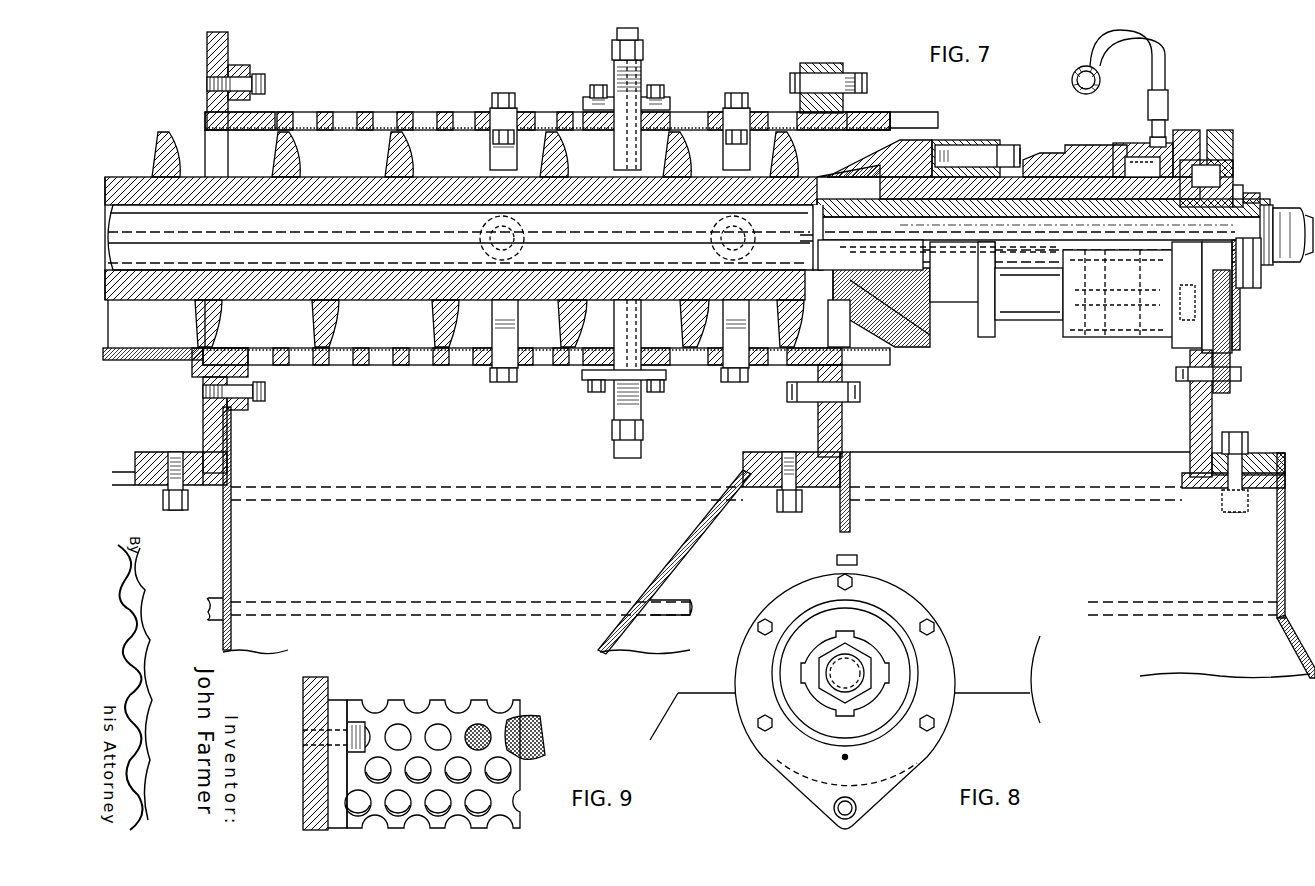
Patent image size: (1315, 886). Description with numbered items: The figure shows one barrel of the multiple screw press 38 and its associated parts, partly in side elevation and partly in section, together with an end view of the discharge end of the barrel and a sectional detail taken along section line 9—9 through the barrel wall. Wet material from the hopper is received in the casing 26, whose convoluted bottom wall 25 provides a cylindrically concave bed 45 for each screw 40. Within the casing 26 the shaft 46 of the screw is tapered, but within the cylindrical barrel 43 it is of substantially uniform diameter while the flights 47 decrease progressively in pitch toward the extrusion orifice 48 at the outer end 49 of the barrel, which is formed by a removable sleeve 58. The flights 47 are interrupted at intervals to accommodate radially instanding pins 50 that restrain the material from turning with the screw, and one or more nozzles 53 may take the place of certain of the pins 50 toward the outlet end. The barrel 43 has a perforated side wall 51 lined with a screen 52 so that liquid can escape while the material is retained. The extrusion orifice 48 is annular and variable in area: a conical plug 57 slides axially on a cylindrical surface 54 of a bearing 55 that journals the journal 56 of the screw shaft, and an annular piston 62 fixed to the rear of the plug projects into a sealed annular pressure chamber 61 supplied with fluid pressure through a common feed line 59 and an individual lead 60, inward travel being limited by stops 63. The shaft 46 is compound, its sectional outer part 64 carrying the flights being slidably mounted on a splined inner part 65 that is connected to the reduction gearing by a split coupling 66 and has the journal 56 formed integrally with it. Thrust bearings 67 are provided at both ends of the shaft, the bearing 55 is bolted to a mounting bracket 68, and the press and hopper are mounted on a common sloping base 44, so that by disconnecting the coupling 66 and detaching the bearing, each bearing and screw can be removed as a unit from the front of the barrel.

In FIG. 7, the section line 9 is at (185, 48).
In FIG. 7, the bottom wall 25 is at (178, 348).
In FIG. 7, the casing 26 is at (230, 42).
In FIG. 9, the casing 26 is at (328, 678).
In FIG. 7, the multiple screw press 38 is at (823, 62).
In FIG. 7, the screws 40 is at (383, 303).
In FIG. 7, the cylindrical barrel 43 is at (442, 112).
In FIG. 9, the cylindrical barrel 43 is at (438, 702).
In FIG. 7, the base 44 is at (672, 616).
In FIG. 7, the cylindrically concave bed 45 is at (143, 348).
In FIG. 7, the screw shaft 46 is at (335, 175).
In FIG. 7, the flights 47 is at (155, 156).
In FIG. 7, the extrusion orifice 48 is at (893, 128).
In FIG. 7, the outer end of barrel 49 is at (893, 112).
In FIG. 7, the radially instanding pins 50 is at (490, 152).
In FIG. 7, the perforated side wall 51 is at (361, 112).
In FIG. 9, the perforated side wall 51 is at (480, 700).
In FIG. 7, the screen 52 is at (303, 112).
In FIG. 9, the screen 52 is at (540, 716).
In FIG. 7, the radially instanding nozzles 53 is at (614, 162).
In FIG. 7, the cylindrical surface 54 is at (945, 145).
In FIG. 7, the bearing 55 is at (953, 306).
In FIG. 7, the journal 56 is at (1013, 234).
In FIG. 7, the conical plug 57 is at (878, 160).
In FIG. 7, the removable sleeve 58 is at (878, 366).
In FIG. 7, the common feed line 59 is at (1072, 81).
In FIG. 7, the individual lead 60 is at (1165, 55).
In FIG. 8, the individual lead 60 is at (857, 561).
In FIG. 7, the sealed annular pressure chamber 61 is at (1135, 152).
In FIG. 7, the annular piston 62 is at (1040, 153).
In FIG. 7, the stops 63 is at (978, 180).
In FIG. 7, the outer shaft part 64 is at (447, 178).
In FIG. 7, the splined inner part 65 is at (433, 231).
In FIG. 7, the split coupling 66 is at (704, 536).
In FIG. 7, the thrust bearings 67 is at (1238, 182).
In FIG. 7, the mounting bracket 68 is at (1213, 416).
In FIG. 8, the mounting bracket 68 is at (992, 693).